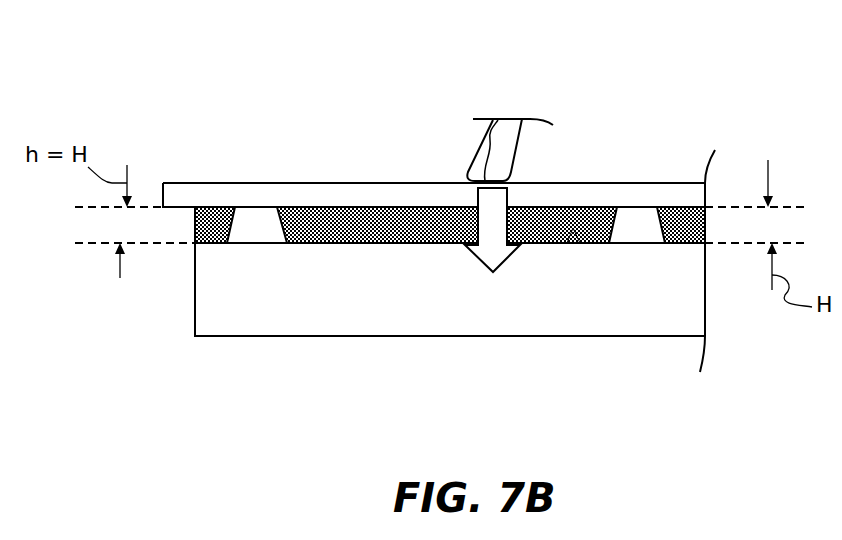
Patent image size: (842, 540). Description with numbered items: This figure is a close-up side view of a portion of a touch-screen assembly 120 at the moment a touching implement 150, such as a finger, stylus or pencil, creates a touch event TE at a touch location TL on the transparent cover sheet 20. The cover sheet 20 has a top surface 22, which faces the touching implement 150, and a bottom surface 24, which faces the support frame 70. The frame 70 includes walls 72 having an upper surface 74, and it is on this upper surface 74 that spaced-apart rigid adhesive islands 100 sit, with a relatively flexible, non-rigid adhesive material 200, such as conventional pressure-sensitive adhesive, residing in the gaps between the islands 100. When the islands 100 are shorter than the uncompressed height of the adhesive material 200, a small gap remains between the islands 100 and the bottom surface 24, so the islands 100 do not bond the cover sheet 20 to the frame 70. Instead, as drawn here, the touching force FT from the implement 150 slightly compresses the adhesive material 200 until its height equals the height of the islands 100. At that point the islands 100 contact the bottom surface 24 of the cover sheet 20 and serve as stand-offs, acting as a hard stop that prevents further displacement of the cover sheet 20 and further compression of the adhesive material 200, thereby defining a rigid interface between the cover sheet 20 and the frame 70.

The cover sheet 20 is at (340, 166).
The top surface 22 is at (683, 183).
The bottom surface 24 is at (368, 225).
The adhesive material 200 is at (330, 210).
The adhesive islands 100 is at (258, 227).
The support frame 70 is at (182, 303).
The walls 72 is at (230, 322).
The upper surface 74 is at (573, 223).
The touch-screen assembly 120 is at (185, 94).
The touching implement 150 is at (505, 132).
The touch event TE is at (486, 77).
The touch location TL is at (536, 168).
The touching force FT is at (482, 265).